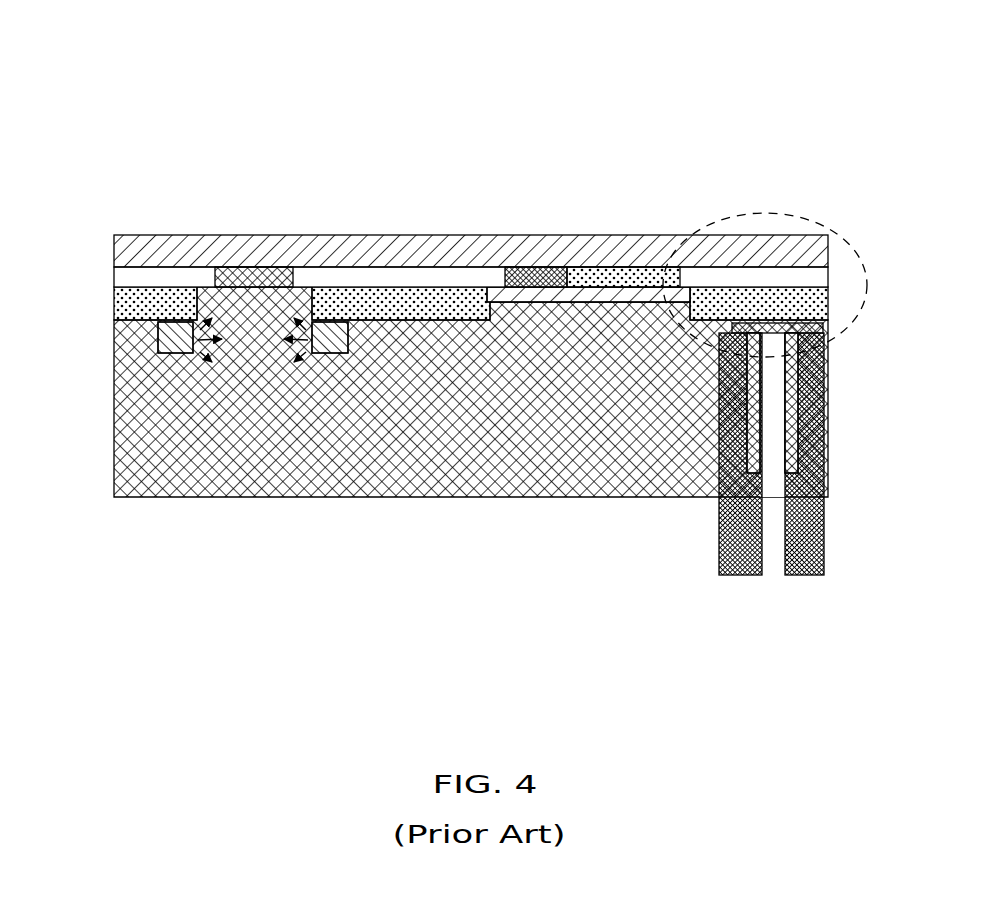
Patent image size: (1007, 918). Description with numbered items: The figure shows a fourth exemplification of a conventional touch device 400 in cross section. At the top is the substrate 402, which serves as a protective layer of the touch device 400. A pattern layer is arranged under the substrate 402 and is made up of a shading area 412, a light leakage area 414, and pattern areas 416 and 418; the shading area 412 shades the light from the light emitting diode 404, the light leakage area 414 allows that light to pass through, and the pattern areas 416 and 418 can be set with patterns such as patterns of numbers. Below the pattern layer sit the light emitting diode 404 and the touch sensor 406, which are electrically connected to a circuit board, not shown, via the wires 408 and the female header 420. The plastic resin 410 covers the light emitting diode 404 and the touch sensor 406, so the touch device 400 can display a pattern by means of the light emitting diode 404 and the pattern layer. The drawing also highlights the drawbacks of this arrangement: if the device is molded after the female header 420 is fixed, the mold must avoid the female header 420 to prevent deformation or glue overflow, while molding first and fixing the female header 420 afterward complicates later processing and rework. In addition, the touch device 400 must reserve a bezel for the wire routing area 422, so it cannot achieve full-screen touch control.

The touch device 400 is at (884, 136).
The substrate 402 is at (815, 250).
The light emitting diode 404 is at (178, 354).
The touch sensor 406 is at (587, 300).
The wires 408 is at (120, 308).
The plastic resin 410 is at (525, 462).
The shading area 412 is at (122, 280).
The light leakage area 414 is at (255, 277).
The pattern area 416 is at (530, 282).
The pattern area 418 is at (627, 278).
The female header 420 is at (825, 378).
The wire routing area 422 is at (770, 214).